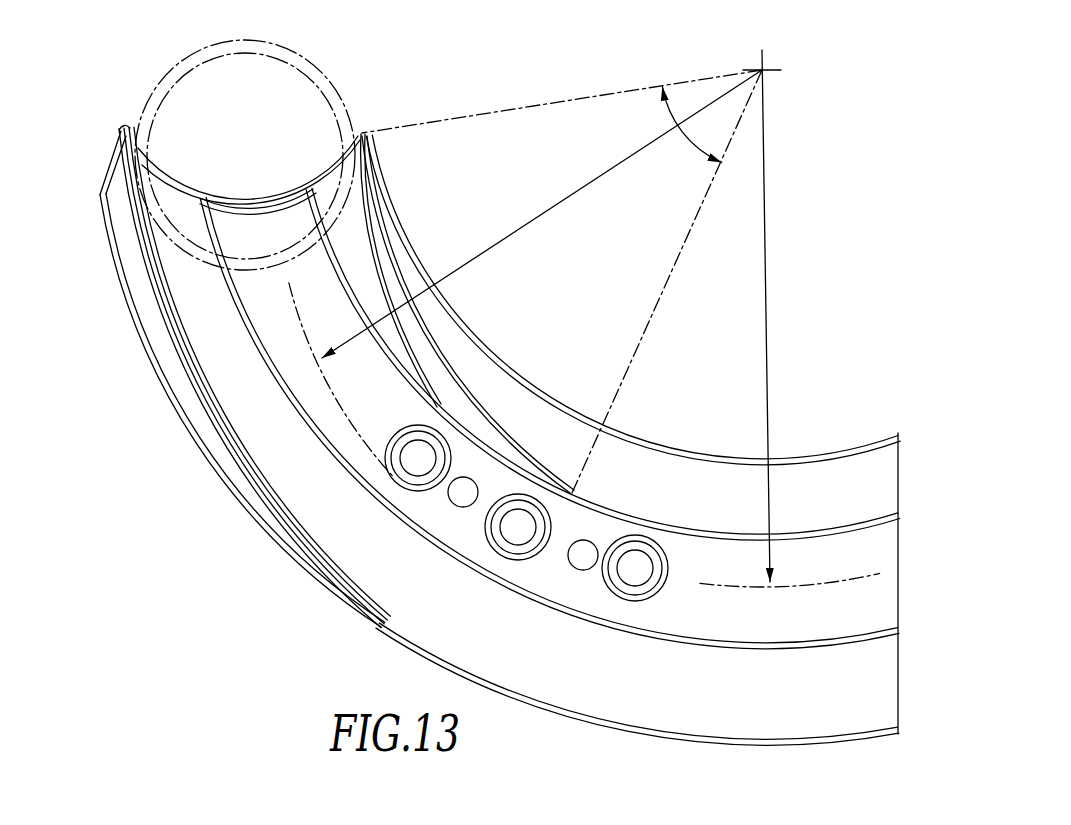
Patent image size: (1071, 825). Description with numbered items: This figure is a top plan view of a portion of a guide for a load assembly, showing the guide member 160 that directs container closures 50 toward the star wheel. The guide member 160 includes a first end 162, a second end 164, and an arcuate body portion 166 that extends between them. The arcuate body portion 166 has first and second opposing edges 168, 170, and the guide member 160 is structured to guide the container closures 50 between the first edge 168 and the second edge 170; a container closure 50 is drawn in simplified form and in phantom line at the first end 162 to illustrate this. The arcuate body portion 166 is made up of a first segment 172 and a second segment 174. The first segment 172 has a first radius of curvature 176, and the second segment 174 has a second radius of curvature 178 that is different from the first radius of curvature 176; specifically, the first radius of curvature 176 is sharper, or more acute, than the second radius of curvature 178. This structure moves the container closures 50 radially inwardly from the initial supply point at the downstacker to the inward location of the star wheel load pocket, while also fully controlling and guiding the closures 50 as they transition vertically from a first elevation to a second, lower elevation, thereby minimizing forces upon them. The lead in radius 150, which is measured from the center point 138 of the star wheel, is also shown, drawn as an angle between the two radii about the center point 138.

The container closure 50 is at (283, 57).
The center point 138 is at (782, 58).
The lead in radius 150 is at (690, 143).
The guide member 160 is at (265, 623).
The first end 162 is at (117, 129).
The second end 164 is at (901, 742).
The arcuate body portion 166 is at (518, 394).
The first edge 168 is at (135, 211).
The second edge 170 is at (383, 172).
The first segment 172 is at (254, 440).
The second segment 174 is at (717, 478).
The first radius of curvature 176 is at (548, 228).
The second radius of curvature 178 is at (766, 266).